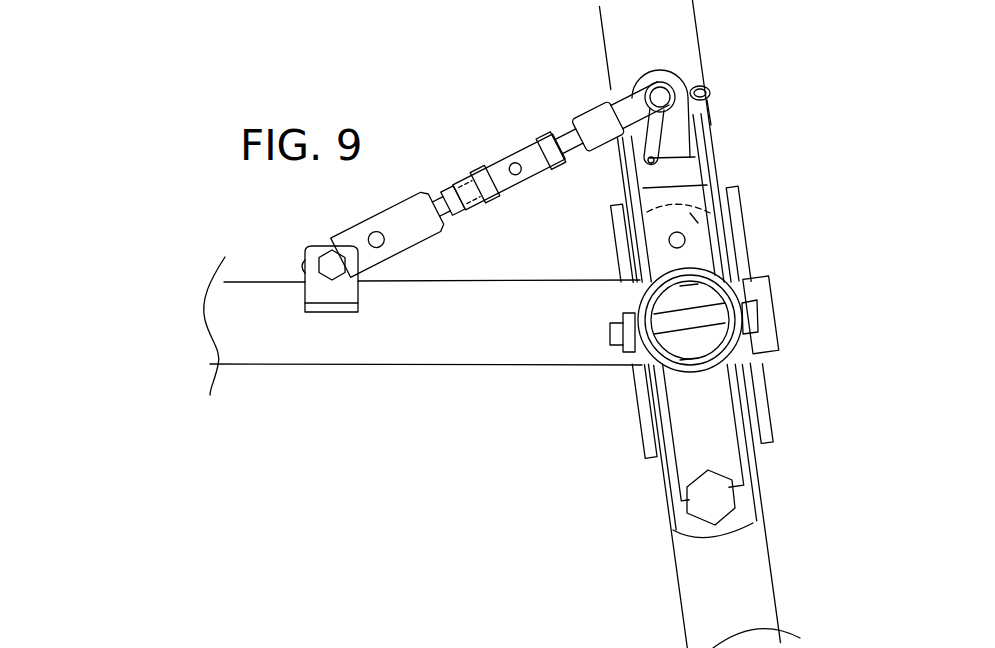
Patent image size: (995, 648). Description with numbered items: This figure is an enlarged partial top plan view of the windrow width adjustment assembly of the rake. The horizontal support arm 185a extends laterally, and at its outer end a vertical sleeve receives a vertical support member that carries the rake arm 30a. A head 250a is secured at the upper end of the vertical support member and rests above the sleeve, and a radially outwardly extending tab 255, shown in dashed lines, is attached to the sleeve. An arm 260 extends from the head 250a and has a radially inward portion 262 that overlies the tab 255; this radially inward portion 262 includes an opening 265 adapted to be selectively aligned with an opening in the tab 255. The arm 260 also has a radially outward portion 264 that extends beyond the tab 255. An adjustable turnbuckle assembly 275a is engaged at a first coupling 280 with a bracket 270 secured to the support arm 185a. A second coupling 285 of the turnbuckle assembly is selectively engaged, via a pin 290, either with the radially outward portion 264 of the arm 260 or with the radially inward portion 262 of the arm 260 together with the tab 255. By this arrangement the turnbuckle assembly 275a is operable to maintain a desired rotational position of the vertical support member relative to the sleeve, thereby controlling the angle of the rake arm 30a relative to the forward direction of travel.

The rake arm 30a is at (790, 556).
The horizontal support arm 185a is at (500, 366).
The head 250a is at (737, 376).
The tab 255 is at (741, 230).
The arm 260 is at (693, 127).
The radially inward portion 262 is at (722, 211).
The radially outward portion 264 is at (700, 68).
The opening 265 is at (688, 250).
The bracket 270 is at (322, 245).
The adjustable turnbuckle assembly 275a is at (508, 218).
The first coupling 280 is at (372, 200).
The second coupling 285 is at (605, 75).
The pin 290 is at (633, 88).